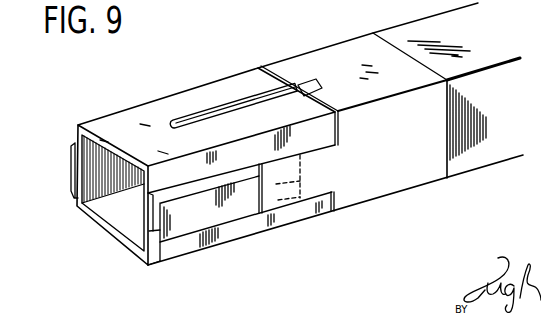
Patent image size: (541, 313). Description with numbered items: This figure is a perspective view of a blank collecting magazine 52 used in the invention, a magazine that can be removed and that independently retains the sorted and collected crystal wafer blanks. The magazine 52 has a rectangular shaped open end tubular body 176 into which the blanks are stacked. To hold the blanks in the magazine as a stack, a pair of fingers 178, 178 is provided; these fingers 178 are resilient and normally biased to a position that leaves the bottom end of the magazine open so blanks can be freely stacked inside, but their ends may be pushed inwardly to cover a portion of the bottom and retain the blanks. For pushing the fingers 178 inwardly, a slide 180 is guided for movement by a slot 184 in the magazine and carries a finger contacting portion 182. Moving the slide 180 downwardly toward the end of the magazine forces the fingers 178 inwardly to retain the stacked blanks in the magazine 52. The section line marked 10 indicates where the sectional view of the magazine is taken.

The magazine 52 is at (252, 55).
The rectangular shaped open end tubular body 176 is at (113, 150).
The fingers 178 is at (70, 178).
The slide 180 is at (380, 192).
The finger contacting portion 182 is at (283, 201).
The slot 184 is at (237, 110).
The section line 10- 10 is at (58, 161).